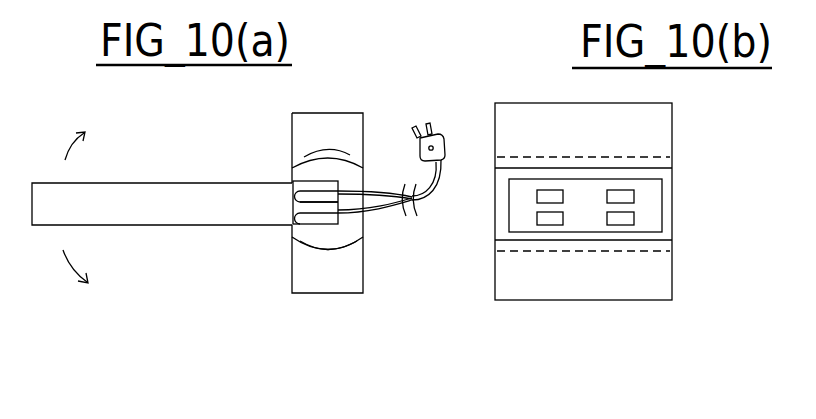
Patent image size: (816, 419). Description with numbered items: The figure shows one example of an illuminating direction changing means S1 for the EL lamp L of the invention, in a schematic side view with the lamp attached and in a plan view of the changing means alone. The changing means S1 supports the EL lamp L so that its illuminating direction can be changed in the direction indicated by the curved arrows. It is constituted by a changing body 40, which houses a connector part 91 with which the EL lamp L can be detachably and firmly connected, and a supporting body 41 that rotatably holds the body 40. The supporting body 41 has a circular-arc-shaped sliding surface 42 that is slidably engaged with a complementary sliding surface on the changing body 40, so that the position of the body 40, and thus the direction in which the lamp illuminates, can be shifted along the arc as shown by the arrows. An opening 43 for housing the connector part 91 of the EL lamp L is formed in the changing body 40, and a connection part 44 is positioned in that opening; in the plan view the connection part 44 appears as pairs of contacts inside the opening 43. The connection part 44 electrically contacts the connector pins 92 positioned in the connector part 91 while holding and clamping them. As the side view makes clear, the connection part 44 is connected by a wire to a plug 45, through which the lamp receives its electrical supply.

In FIG. 10A, the body 40 is at (350, 224).
In FIG. 10B, the body 40 is at (673, 220).
In FIG. 10A, the supporting body 41 is at (308, 128).
In FIG. 10B, the supporting body 41 is at (655, 287).
In FIG. 10A, the circular-arc-shaped sliding surface 42 is at (347, 158).
In FIG. 10B, the opening 43 is at (660, 231).
In FIG. 10A, the connection part 44 is at (295, 226).
In FIG. 10B, the connection part 44 is at (634, 196).
In FIG. 10A, the plug 45 is at (441, 133).
In FIG. 10A, the connector part 91 is at (293, 180).
In FIG. 10A, the connector pins 92 is at (296, 200).
In FIG. 10A, the EL lamp L is at (153, 227).
In FIG. 10A, the changing means S1 is at (341, 298).
In FIG. 10B, the changing means S1 is at (677, 303).